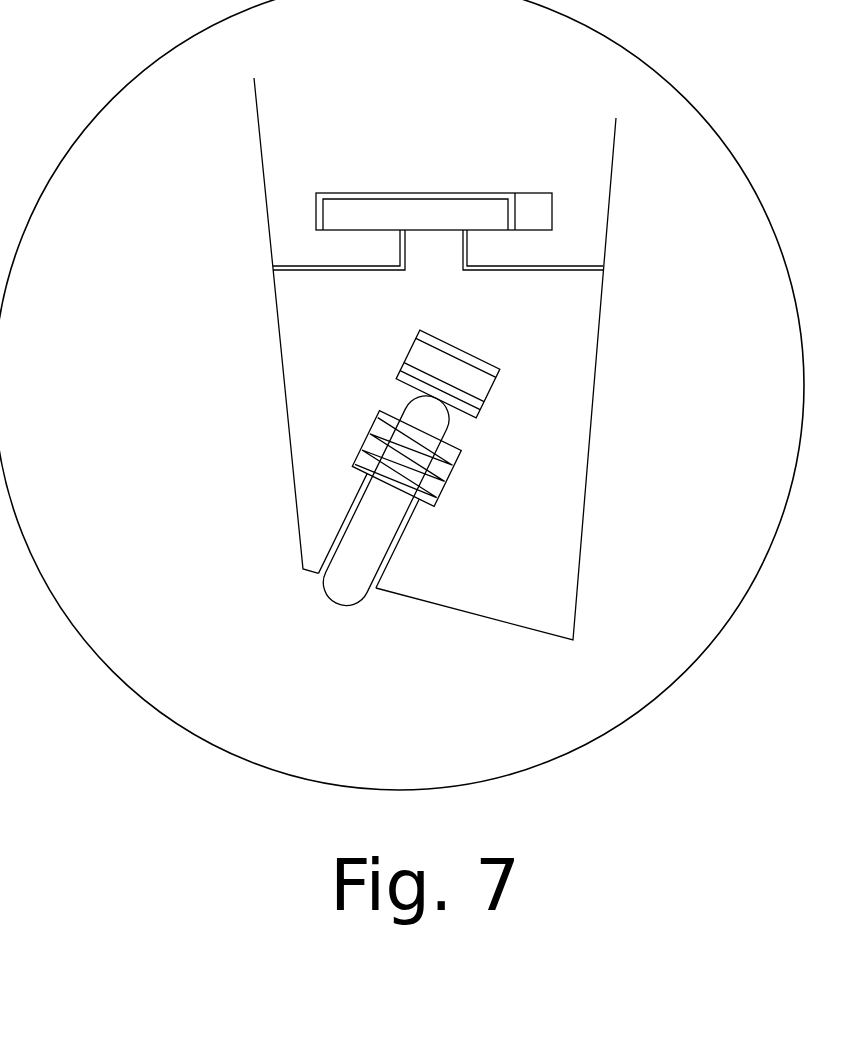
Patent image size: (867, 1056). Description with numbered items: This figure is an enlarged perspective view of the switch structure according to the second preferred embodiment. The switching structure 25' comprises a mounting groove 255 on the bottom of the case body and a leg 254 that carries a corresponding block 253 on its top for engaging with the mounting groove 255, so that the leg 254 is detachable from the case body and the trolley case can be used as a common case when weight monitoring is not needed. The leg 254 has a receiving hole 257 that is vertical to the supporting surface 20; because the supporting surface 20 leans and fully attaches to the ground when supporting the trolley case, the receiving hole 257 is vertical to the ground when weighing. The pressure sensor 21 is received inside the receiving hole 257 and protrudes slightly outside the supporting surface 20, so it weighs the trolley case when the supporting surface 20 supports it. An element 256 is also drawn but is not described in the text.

The supporting surface 20 is at (387, 459).
The pressure sensor 21 is at (363, 538).
The switching structure 25' is at (417, 231).
The block 253 is at (348, 217).
The leg 254 is at (397, 640).
The mounting groove 255 is at (535, 212).
The nut 256 is at (382, 428).
The receiving hole 257 is at (362, 445).